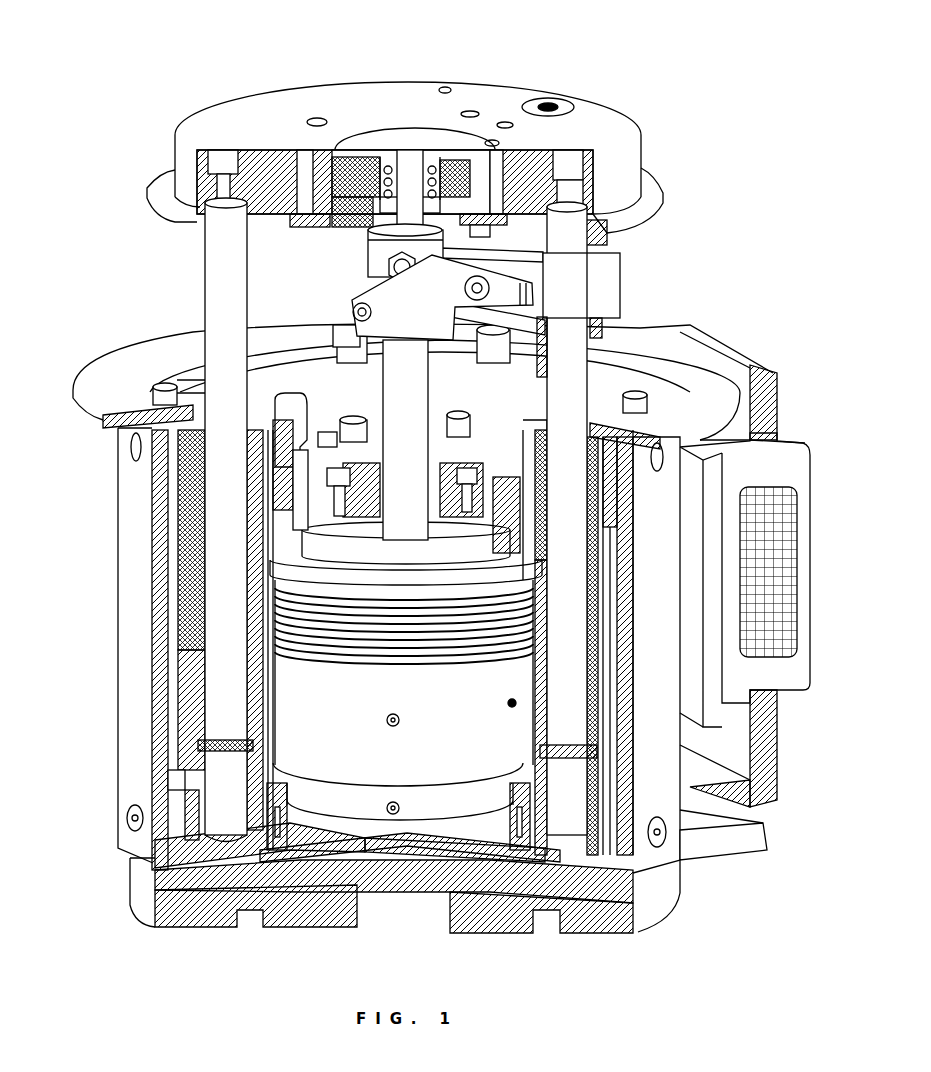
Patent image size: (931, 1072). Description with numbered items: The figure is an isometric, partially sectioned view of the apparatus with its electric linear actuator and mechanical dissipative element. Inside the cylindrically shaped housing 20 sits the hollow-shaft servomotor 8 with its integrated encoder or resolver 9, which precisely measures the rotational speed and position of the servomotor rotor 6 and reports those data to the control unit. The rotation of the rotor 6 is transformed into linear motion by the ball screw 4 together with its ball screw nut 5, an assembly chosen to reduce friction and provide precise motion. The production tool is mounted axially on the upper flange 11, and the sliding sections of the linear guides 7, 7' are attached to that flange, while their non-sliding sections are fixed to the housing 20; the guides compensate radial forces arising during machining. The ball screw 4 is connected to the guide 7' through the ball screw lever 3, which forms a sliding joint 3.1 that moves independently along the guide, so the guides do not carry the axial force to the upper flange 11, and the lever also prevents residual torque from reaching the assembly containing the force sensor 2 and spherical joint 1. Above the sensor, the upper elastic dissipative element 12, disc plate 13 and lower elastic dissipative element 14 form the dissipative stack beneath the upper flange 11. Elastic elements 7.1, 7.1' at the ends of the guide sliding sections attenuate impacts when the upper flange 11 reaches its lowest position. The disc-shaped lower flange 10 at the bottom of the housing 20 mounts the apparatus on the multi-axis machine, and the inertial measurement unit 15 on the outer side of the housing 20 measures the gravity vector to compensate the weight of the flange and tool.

The spherical joint 1 is at (350, 227).
The force sensor 2 is at (378, 258).
The ball screw lever 3 is at (433, 292).
The sliding joint 3.1 is at (598, 288).
The ball screw 4 is at (411, 394).
The ball screw nut 5 is at (375, 430).
The servomotor rotor 6 is at (480, 540).
The linear guide 7 is at (226, 520).
The linear guide 7' is at (567, 518).
The elastic element of the guide 7.1 is at (156, 766).
The elastic element of the guide 7.1' is at (568, 782).
The servomotor with the hollow shaft 8 is at (368, 685).
The servomotor encoder or resolver 9 is at (364, 810).
The lower flange 10 is at (322, 920).
The upper flange 11 is at (255, 108).
The upper elastic dissipative element 12 is at (427, 173).
The disc plate 13 is at (318, 226).
The lower elastic dissipative element 14 is at (465, 222).
The inertial measurement unit 15 is at (778, 479).
The housing 20 is at (130, 620).